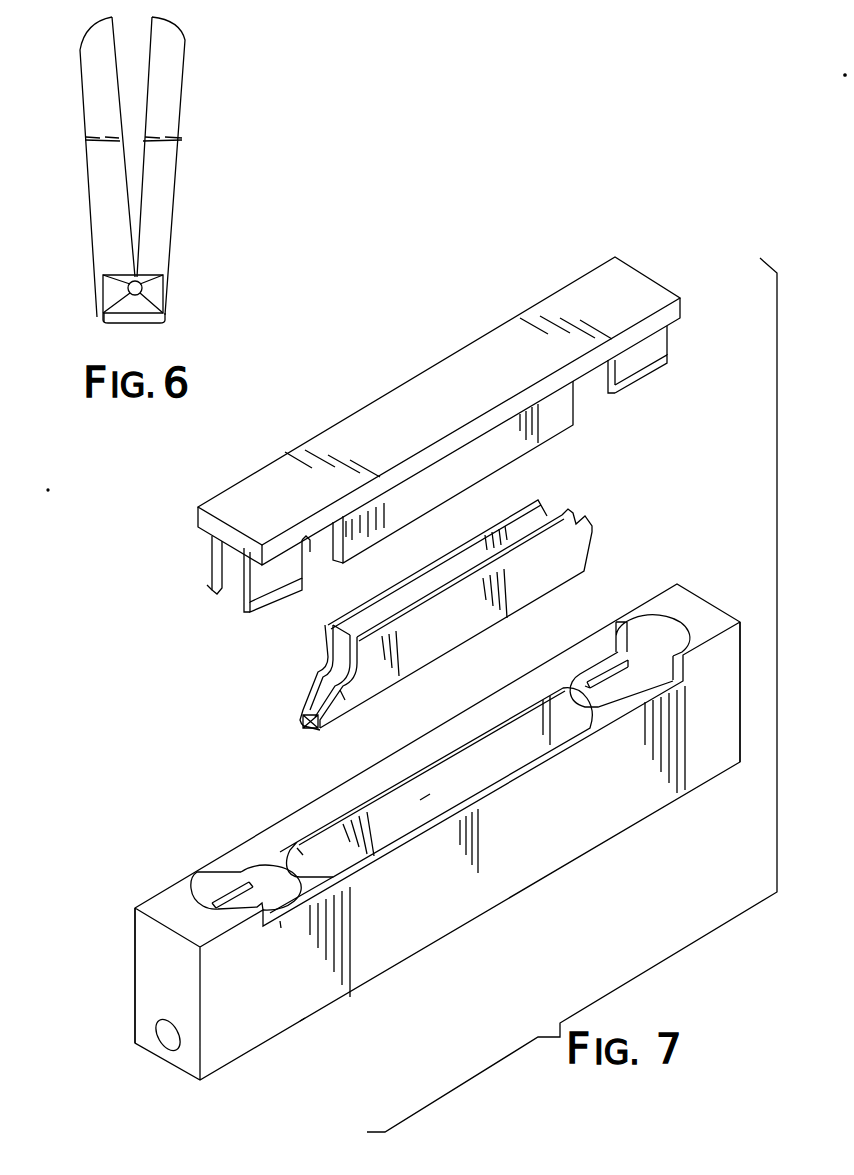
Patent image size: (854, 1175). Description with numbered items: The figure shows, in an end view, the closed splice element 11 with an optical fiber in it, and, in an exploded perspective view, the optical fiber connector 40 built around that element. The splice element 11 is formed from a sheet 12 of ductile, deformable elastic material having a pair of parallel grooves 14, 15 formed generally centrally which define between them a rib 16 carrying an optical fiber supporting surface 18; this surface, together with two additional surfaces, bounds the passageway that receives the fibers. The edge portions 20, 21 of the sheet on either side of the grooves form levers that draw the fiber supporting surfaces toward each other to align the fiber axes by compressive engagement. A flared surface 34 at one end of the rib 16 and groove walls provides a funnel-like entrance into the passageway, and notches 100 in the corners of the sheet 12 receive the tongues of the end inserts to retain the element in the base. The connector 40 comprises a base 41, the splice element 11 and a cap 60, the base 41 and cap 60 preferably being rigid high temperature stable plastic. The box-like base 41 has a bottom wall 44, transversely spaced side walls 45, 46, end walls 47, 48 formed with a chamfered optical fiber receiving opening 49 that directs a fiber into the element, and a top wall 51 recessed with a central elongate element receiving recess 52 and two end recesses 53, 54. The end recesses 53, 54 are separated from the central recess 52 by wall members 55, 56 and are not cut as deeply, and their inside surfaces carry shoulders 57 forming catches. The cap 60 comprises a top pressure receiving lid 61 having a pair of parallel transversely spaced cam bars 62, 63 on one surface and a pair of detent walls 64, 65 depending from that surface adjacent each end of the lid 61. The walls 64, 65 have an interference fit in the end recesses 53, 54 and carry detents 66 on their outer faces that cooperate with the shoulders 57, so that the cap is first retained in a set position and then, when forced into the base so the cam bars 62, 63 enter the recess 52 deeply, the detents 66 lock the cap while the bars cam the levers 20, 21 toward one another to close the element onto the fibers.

In FIG. 7, the splice element 11 is at (428, 625).
In FIG. 7, the sheet 12 is at (418, 667).
In FIG. 6, the groove 14 is at (163, 312).
In FIG. 6, the groove 15 is at (105, 322).
In FIG. 6, the rib 16 is at (138, 307).
In FIG. 6, the optical fiber supporting surface 18 is at (128, 307).
In FIG. 6, the edge portion 20 is at (88, 43).
In FIG. 7, the edge portion 20 is at (483, 533).
In FIG. 6, the edge portion 21 is at (185, 50).
In FIG. 7, the edge portion 21 is at (510, 563).
In FIG. 7, the flared surface 34 is at (307, 725).
In FIG. 7, the optical fiber connector 40 is at (420, 866).
In FIG. 7, the base 41 is at (320, 1004).
In FIG. 7, the bottom wall 44 is at (463, 918).
In FIG. 7, the side wall 45 is at (412, 912).
In FIG. 7, the side wall 46 is at (378, 783).
In FIG. 7, the end wall 47 is at (148, 985).
In FIG. 7, the end wall 48 is at (742, 748).
In FIG. 7, the optical fiber receiving opening 49 is at (170, 1043).
In FIG. 7, the top wall 51 is at (162, 902).
In FIG. 7, the central elongate element receiving recess 52 is at (440, 775).
In FIG. 7, the end recess 53 is at (260, 878).
In FIG. 7, the end recess 54 is at (640, 633).
In FIG. 7, the wall member 55 is at (290, 862).
In FIG. 7, the wall member 56 is at (557, 688).
In FIG. 7, the shoulder 57 is at (612, 665).
In FIG. 7, the cap 60 is at (443, 456).
In FIG. 7, the top pressure receiving lid 61 is at (405, 400).
In FIG. 7, the cam bar 62 is at (553, 428).
In FIG. 7, the cam bar 63 is at (315, 550).
In FIG. 7, the wall 64 is at (270, 588).
In FIG. 7, the wall 65 is at (220, 590).
In FIG. 7, the detent 66 is at (213, 582).
In FIG. 6, the notch 100 is at (172, 123).
In FIG. 7, the notch 100 is at (325, 670).